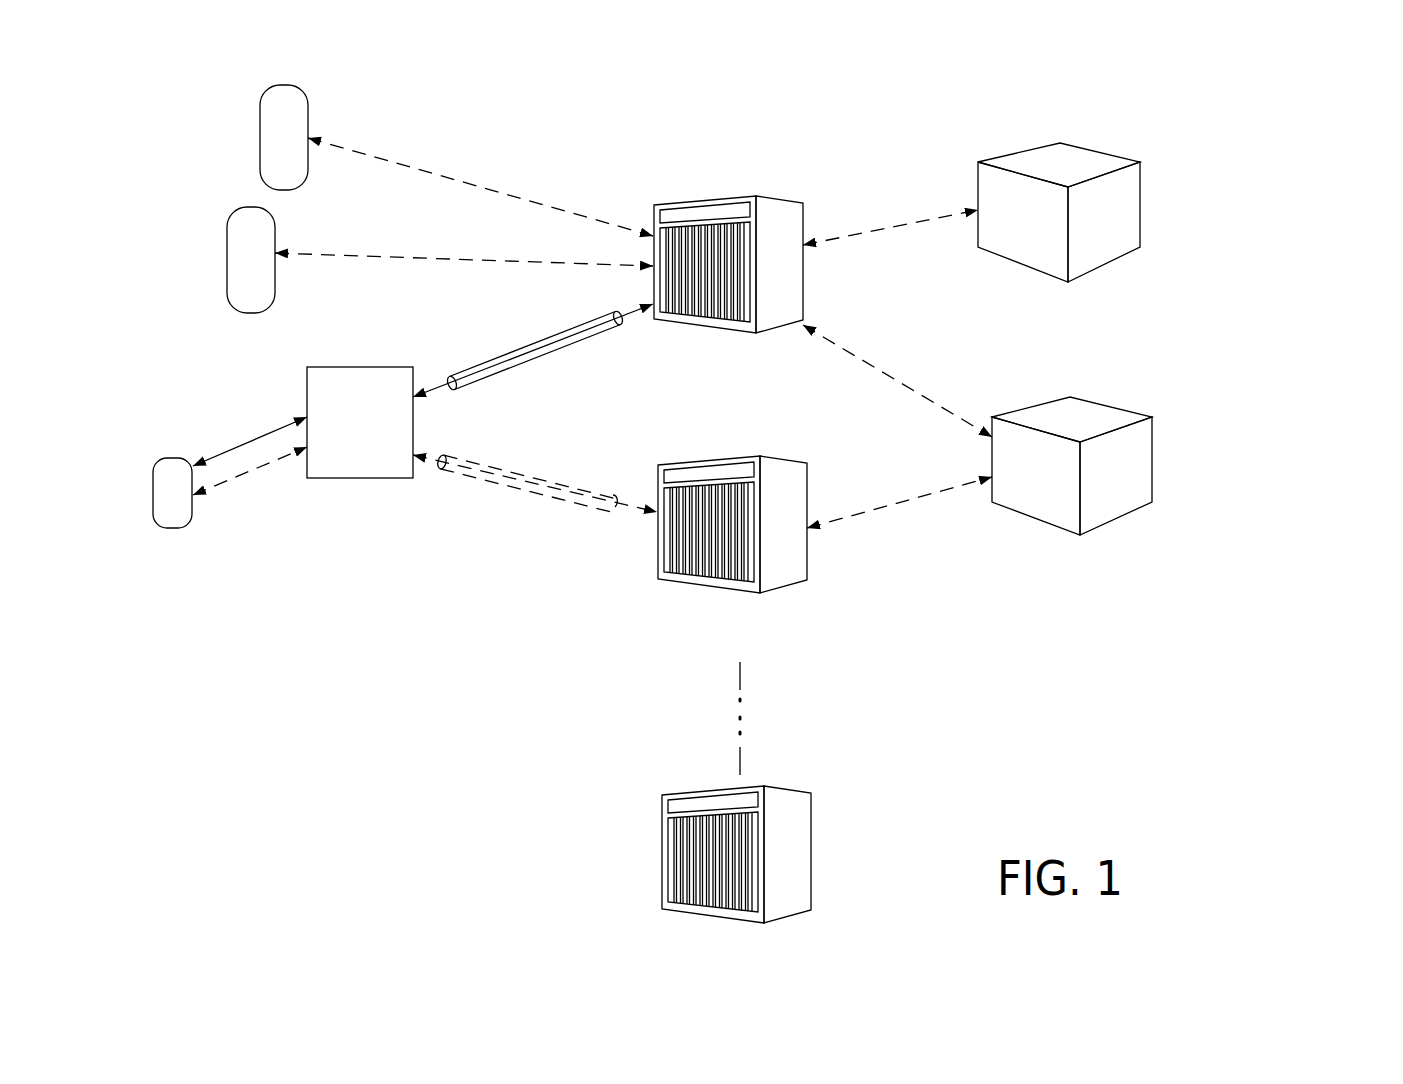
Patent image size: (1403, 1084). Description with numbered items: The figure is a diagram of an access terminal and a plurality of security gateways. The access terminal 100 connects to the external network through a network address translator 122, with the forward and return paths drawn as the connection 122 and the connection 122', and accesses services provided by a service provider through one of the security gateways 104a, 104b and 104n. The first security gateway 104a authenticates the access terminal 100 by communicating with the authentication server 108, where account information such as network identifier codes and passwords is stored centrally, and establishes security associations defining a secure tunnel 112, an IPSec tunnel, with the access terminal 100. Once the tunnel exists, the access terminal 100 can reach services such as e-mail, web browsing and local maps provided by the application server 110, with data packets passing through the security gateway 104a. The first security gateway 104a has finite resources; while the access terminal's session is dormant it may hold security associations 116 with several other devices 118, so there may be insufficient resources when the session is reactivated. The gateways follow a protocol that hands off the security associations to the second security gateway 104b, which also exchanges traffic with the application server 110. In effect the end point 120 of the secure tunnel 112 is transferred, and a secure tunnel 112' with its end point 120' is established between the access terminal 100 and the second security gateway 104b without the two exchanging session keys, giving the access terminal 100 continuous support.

The access terminal 100 is at (170, 458).
The first security gateway 104a is at (730, 198).
The second security gateway 104b is at (757, 455).
The security gateway n 104n is at (778, 786).
The authentication server 108 is at (1082, 160).
The application server 110 is at (1092, 412).
The secure tunnel 112 is at (533, 350).
The secure tunnel 112' is at (535, 468).
The security associations 116 is at (440, 176).
The other devices 118 is at (262, 128).
The end point 120 is at (600, 349).
The end point 120' is at (611, 462).
The network address translator (NAT) 122 is at (311, 399).
The network address translator connection 122' is at (250, 500).